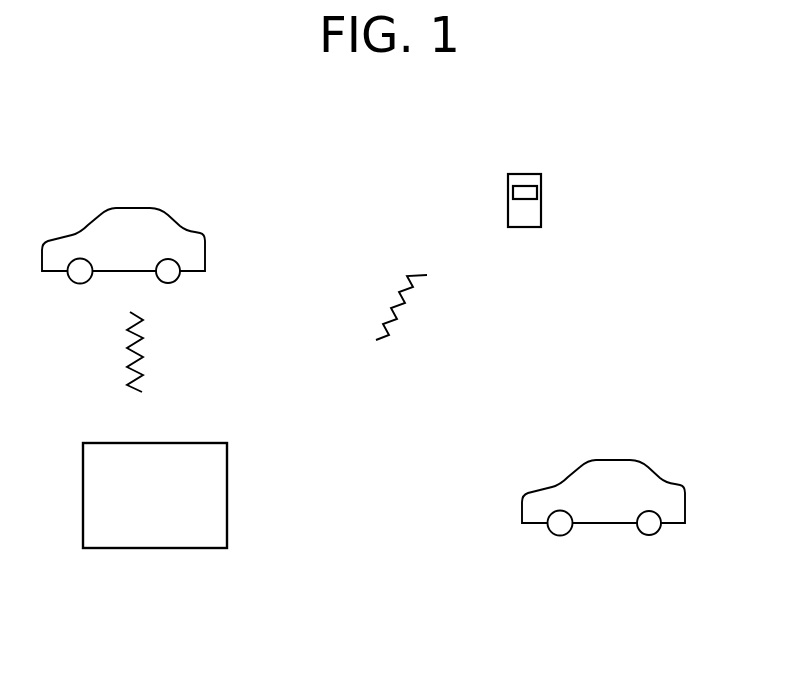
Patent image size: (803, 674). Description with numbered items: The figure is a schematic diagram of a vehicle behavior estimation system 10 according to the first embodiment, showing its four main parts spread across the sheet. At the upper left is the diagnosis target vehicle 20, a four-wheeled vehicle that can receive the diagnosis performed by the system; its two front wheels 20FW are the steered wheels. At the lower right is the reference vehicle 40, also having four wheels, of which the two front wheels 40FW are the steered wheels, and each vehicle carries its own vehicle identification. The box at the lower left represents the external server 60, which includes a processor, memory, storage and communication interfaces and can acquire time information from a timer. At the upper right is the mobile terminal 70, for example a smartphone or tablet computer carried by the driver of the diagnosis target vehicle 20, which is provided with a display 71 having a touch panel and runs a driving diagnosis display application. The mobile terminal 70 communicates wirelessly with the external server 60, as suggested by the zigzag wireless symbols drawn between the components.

The vehicle behavior estimation system 10 is at (665, 317).
The diagnosis target vehicle 20 is at (153, 253).
The front wheels 20FW is at (80, 271).
The reference vehicle 40 is at (622, 521).
The front wheels 40FW is at (560, 523).
The external server 60 is at (155, 548).
The mobile terminal 70 is at (570, 169).
The display 71 is at (522, 192).